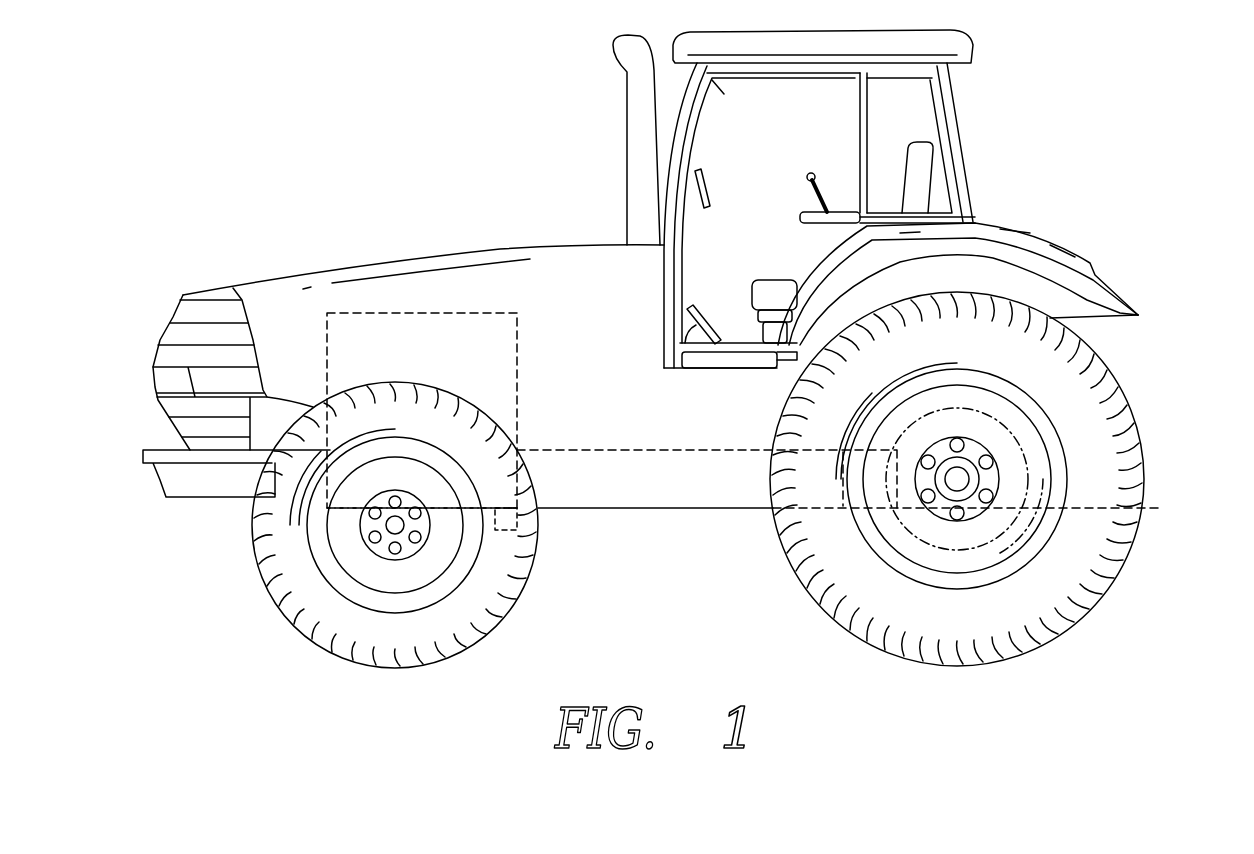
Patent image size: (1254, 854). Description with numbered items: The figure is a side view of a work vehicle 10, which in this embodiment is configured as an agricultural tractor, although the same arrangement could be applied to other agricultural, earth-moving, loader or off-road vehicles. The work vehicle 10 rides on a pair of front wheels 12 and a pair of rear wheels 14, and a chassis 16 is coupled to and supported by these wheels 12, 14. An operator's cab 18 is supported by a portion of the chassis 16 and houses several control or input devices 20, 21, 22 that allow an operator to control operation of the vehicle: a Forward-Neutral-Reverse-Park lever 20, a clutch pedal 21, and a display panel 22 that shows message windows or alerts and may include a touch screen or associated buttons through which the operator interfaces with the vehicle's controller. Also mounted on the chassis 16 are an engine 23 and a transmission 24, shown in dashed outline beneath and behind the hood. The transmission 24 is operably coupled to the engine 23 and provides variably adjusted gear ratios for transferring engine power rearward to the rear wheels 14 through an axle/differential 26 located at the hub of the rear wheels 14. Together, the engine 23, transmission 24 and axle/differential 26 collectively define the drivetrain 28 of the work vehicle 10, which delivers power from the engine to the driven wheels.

The work vehicle 10 is at (325, 153).
The front wheels 12 is at (253, 542).
The rear wheels 14 is at (1147, 510).
The chassis 16 is at (605, 512).
The operator's cab 18 is at (963, 148).
The Forward-Neutral-Reverse-Park (FNRP) lever 20 is at (812, 178).
The clutch pedal 21 is at (712, 338).
The display panel 22 is at (708, 182).
The engine 23 is at (397, 313).
The transmission 24 is at (663, 448).
The axle/differential 26 is at (1027, 480).
The drivetrain 28 is at (572, 272).